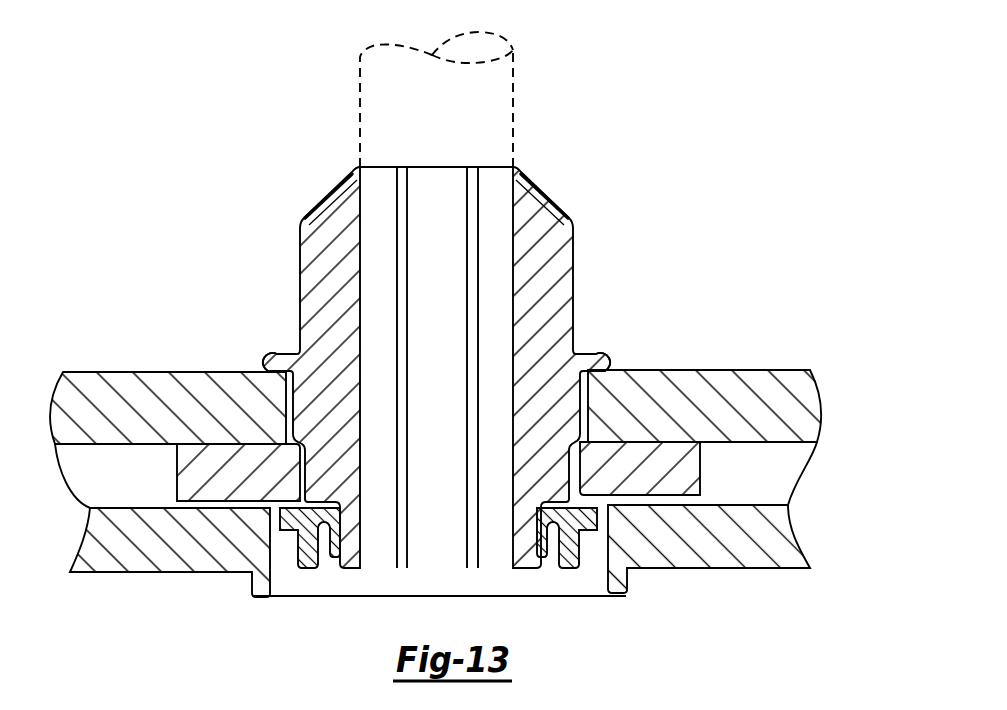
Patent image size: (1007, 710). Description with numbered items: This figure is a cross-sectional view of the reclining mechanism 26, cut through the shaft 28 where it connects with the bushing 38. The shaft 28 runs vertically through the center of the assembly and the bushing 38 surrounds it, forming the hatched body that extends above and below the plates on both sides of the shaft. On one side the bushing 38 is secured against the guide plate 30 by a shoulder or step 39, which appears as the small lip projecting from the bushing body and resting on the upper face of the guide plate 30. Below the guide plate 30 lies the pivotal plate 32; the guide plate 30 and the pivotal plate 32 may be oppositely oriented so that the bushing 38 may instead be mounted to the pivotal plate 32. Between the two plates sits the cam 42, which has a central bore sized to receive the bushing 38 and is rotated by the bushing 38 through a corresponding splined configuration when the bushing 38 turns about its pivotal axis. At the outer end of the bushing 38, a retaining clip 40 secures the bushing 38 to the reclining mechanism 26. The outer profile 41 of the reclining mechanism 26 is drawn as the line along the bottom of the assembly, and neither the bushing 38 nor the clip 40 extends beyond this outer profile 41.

The reclining mechanism 26 is at (612, 89).
The shaft 28 is at (493, 165).
The guide plate 30 is at (112, 378).
The pivotal plate 32 is at (110, 573).
The bushing 38 is at (308, 300).
The shoulder or step 39 is at (266, 360).
The retaining clip 40 is at (310, 570).
The outer profile 41 is at (549, 598).
The cam 42 is at (177, 470).